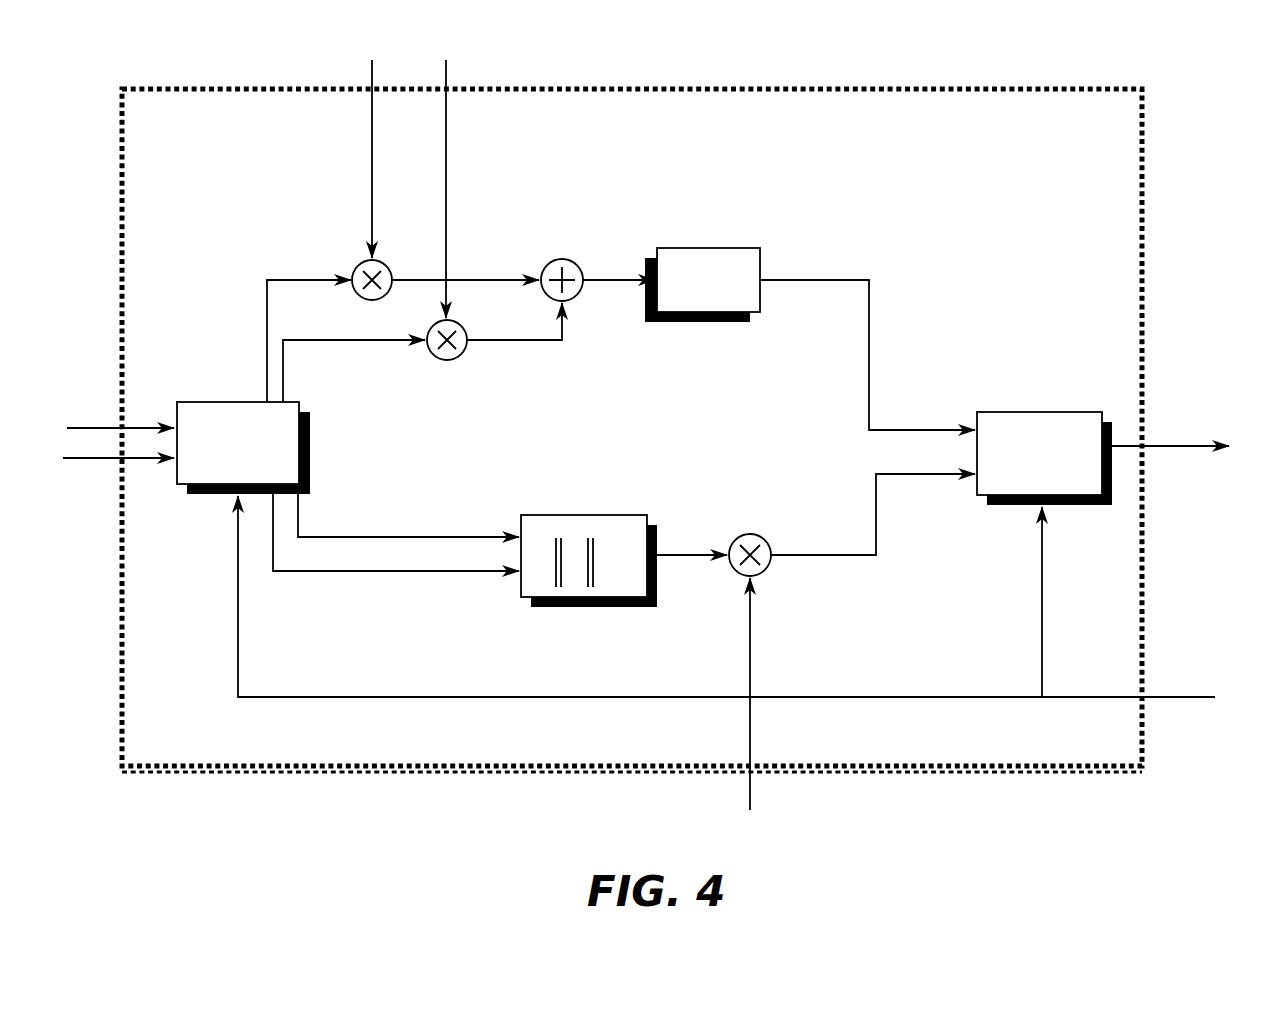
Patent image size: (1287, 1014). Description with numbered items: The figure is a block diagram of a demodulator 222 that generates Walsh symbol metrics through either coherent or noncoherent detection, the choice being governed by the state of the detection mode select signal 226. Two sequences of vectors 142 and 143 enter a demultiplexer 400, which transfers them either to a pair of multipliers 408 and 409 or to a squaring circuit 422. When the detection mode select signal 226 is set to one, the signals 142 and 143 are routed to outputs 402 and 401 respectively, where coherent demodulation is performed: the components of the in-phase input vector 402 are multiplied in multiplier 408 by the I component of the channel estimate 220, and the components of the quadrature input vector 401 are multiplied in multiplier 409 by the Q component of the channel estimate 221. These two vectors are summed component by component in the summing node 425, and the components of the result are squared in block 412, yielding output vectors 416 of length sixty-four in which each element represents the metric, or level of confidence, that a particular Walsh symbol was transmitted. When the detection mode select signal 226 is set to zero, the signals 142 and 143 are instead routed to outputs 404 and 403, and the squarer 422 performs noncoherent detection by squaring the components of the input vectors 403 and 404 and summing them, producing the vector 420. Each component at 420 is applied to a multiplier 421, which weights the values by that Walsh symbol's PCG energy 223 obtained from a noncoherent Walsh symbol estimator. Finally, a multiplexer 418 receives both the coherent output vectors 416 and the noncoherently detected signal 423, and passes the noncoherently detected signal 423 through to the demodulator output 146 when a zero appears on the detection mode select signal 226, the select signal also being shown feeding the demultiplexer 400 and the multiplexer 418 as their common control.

The sequence of vectors 142 is at (105, 425).
The sequence of vectors 143 is at (102, 462).
The demodulator output 146 is at (1196, 447).
The I component of the channel estimate 220 is at (377, 142).
The Q component of the channel estimate 221 is at (455, 172).
The demodulator 222 is at (623, 89).
The PCG energy 223 is at (755, 710).
The detection mode select signal 226 is at (752, 603).
The demultiplexer 400 is at (188, 400).
The output 401 is at (340, 340).
The output 402 is at (287, 280).
The output 403 is at (358, 535).
The output 404 is at (433, 572).
The multiplier 408 is at (352, 273).
The multiplier 409 is at (447, 360).
The squaring block 412 is at (672, 248).
The output vectors 416 is at (798, 280).
The multiplexer 418 is at (1032, 412).
The vector 420 is at (688, 555).
The multiplier 421 is at (748, 534).
The squaring circuit 422 is at (563, 515).
The noncoherently detected signal 423 is at (835, 557).
The summing node 425 is at (562, 259).